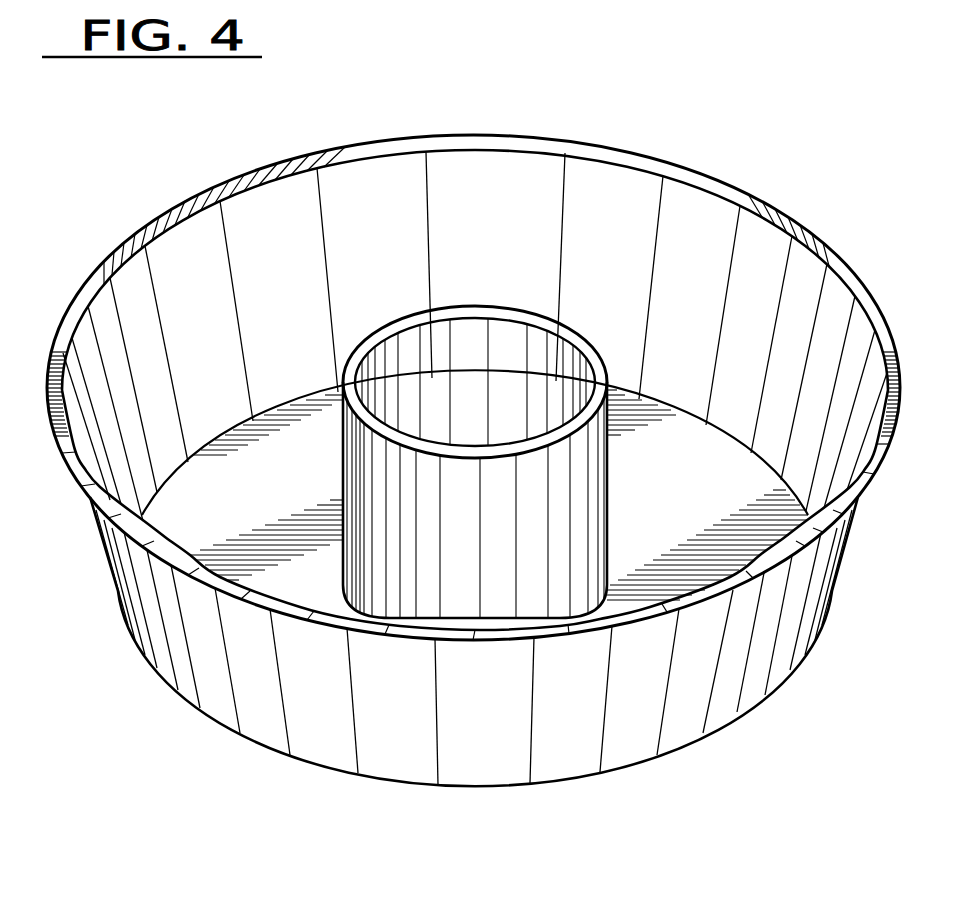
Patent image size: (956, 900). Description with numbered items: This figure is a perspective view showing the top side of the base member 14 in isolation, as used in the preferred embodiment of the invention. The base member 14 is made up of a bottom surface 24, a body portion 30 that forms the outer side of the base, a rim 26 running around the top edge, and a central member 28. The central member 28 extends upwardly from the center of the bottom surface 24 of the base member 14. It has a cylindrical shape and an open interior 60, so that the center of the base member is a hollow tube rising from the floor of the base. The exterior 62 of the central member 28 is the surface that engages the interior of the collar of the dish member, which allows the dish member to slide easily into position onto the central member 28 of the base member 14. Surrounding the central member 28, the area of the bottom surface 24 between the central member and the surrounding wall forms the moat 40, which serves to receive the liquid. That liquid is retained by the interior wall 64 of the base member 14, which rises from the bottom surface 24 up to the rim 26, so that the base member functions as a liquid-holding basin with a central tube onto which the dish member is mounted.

The base member 14 is at (473, 450).
The rim 26 is at (245, 178).
The body portion 30 is at (217, 693).
The interior wall 64 is at (494, 231).
The moat 40 is at (265, 517).
The bottom surface 24 is at (722, 513).
The central member 28 is at (497, 546).
The open interior 60 is at (563, 362).
The exterior 62 is at (357, 455).